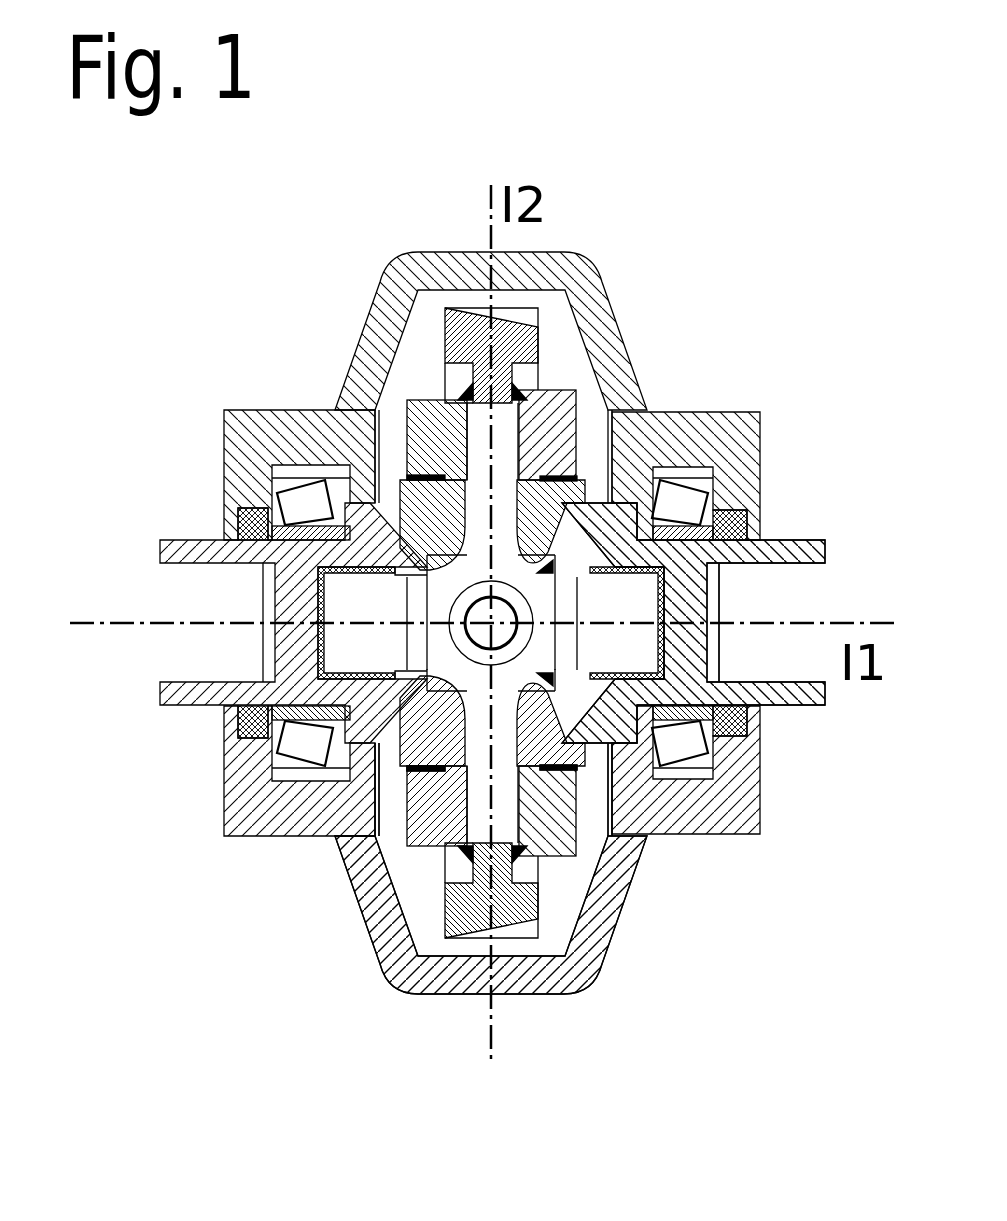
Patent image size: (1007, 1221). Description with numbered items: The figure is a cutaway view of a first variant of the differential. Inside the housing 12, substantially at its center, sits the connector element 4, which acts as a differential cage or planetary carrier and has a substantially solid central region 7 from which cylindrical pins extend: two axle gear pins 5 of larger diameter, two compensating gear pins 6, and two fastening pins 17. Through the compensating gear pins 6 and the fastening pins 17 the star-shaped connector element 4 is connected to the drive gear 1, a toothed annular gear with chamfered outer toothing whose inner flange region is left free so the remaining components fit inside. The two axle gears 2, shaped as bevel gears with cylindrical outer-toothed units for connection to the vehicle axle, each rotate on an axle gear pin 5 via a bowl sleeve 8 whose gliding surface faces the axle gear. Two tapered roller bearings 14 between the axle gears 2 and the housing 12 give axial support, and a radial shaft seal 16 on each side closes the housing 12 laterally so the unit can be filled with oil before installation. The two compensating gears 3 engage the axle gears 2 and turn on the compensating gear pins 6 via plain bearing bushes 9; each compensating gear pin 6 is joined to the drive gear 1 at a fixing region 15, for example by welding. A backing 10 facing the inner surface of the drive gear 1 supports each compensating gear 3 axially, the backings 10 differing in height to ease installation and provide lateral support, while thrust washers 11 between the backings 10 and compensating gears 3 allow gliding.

The drive gear 1 is at (483, 333).
The axle gears 2 is at (160, 688).
The compensating gears 3 is at (437, 517).
The connector element 4 is at (682, 563).
The axle gear pins 5 is at (372, 660).
The compensating gear pins 6 is at (490, 468).
The central region 7 is at (438, 592).
The bowl sleeve 8 is at (318, 592).
The plain bearing bushes 9 is at (460, 760).
The backing 10 is at (543, 427).
The thrust washers 11 is at (405, 773).
The housing 12 is at (395, 945).
The tapered roller bearings 14 is at (307, 732).
The fixing region 15 is at (540, 360).
The radial shaft seal 16 is at (258, 517).
The fastening pins 17 is at (505, 638).